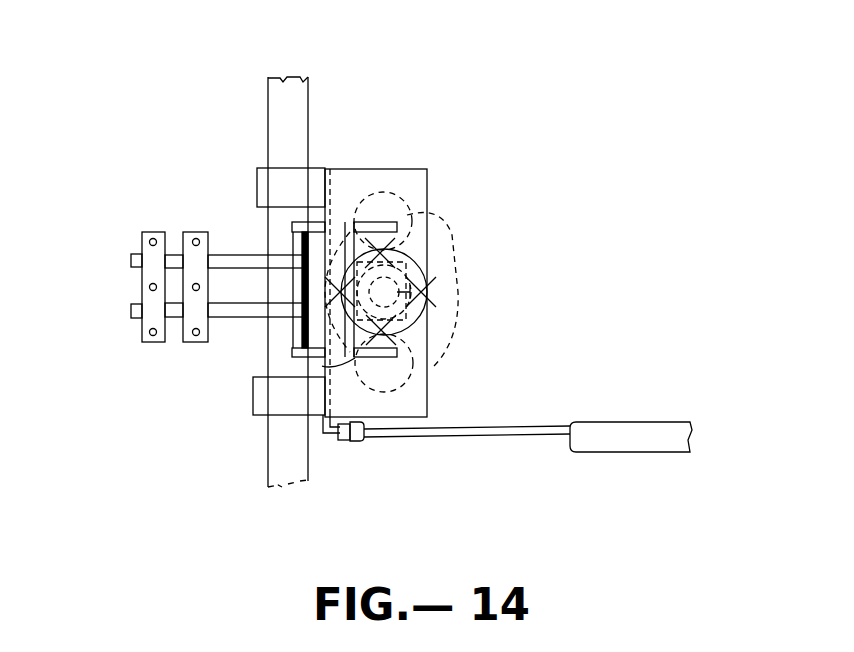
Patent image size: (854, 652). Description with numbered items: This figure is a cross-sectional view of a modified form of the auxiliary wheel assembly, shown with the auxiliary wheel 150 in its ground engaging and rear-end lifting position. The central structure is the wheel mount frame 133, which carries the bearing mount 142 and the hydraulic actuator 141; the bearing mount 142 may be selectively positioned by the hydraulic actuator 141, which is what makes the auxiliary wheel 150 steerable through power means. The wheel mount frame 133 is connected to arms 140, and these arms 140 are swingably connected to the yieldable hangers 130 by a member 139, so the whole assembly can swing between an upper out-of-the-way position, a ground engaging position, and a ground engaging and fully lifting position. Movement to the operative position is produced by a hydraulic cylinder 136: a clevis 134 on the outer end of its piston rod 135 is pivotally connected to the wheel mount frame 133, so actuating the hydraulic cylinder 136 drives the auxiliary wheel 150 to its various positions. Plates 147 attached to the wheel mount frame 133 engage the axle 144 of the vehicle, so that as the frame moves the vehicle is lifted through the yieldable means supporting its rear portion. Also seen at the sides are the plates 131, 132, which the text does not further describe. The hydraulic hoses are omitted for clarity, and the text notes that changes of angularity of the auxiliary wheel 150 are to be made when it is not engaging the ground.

The yieldable hangers 130 is at (238, 255).
The plate 131 is at (142, 245).
The plate 132 is at (195, 232).
The wheel mount frame 133 is at (327, 437).
The clevis 134 is at (345, 442).
The piston rod 135 is at (475, 436).
The hydraulic cylinder 136 is at (635, 437).
The member 139 is at (284, 285).
The arms 140 is at (380, 222).
The hydraulic actuator 141 is at (412, 252).
The bearing mount 142 is at (425, 282).
The axle 144 is at (287, 87).
The plates 147 is at (257, 173).
The auxiliary wheel 150 is at (453, 330).